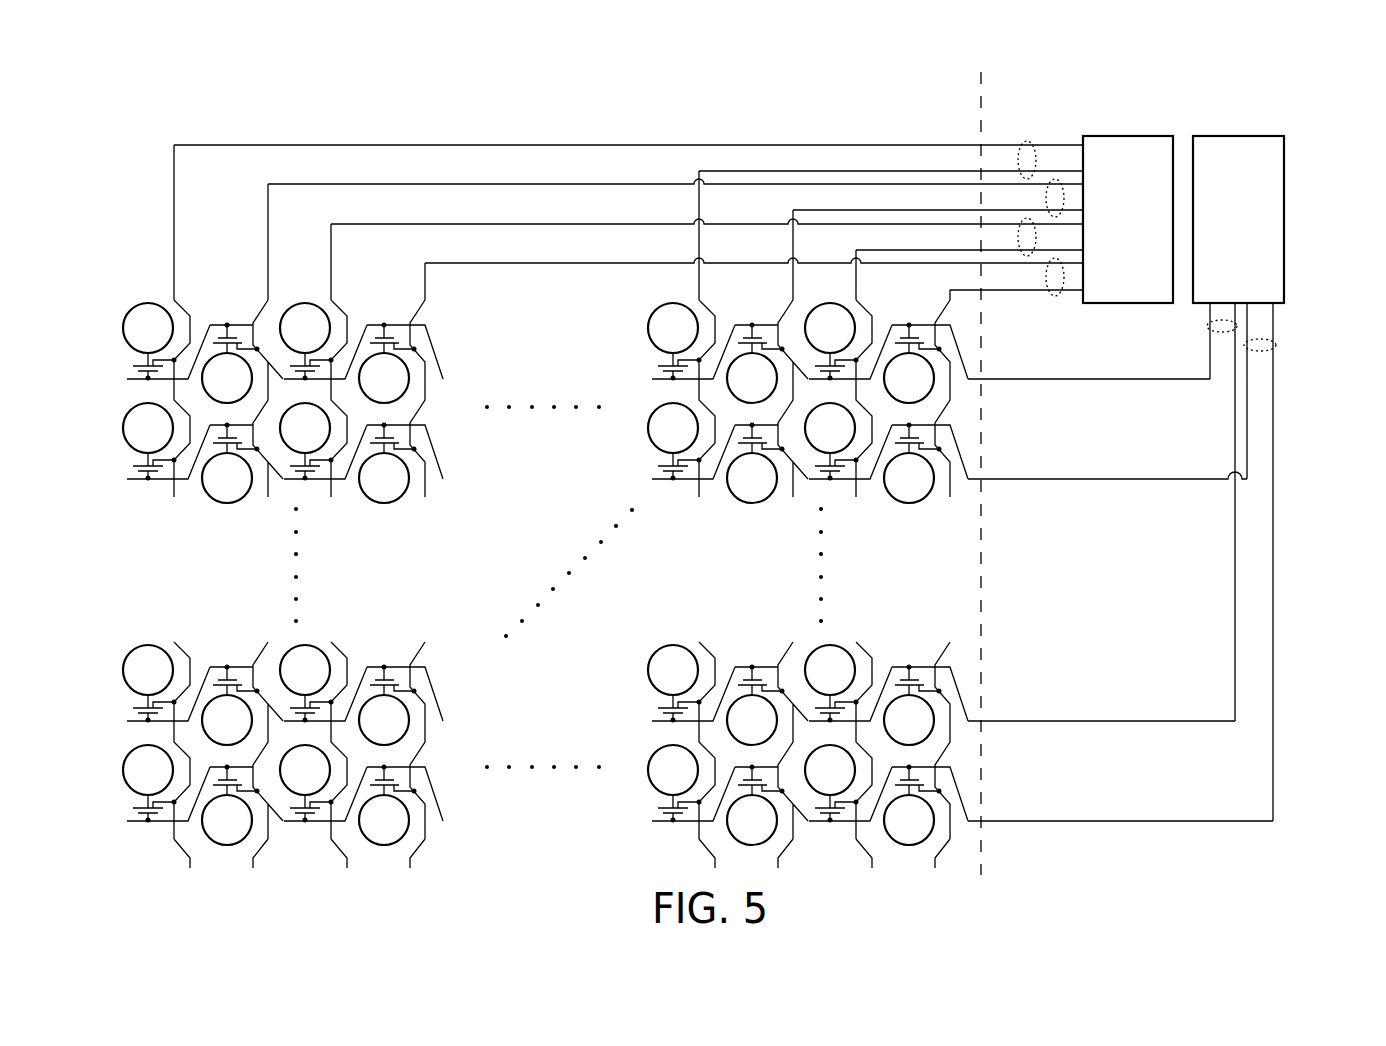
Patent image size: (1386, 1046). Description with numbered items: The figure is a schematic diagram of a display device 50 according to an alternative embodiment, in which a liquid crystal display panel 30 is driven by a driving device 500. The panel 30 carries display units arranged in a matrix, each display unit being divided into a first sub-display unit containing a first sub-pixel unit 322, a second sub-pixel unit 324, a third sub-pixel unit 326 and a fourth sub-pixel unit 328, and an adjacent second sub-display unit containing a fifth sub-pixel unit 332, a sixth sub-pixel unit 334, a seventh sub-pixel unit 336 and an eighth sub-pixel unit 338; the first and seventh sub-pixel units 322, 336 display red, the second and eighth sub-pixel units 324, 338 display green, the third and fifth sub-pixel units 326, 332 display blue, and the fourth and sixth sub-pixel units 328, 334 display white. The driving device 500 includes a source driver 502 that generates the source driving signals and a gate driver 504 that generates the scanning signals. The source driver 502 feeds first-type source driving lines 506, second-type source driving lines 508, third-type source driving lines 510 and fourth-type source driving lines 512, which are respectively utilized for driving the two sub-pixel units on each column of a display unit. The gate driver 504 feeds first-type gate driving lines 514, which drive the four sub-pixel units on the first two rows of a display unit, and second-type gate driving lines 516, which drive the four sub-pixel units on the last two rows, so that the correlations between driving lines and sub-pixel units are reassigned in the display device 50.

The liquid crystal display panel 30 is at (892, 95).
The display device 50 is at (1249, 106).
The driving device 500 is at (1071, 96).
The source driver 502 is at (1120, 305).
The gate driver 504 is at (1286, 217).
The first-type source driving lines 506 is at (1028, 141).
The second-type source driving lines 508 is at (1055, 178).
The third-type source driving lines 510 is at (1027, 257).
The fourth-type source driving lines 512 is at (1055, 297).
The first-type gate driving lines 514 is at (1206, 326).
The second-type gate driving lines 516 is at (1277, 345).
The first sub-pixel unit 322 is at (166, 342).
The second sub-pixel unit 324 is at (231, 363).
The third sub-pixel unit 326 is at (166, 442).
The fourth sub-pixel unit 328 is at (231, 463).
The fifth sub-pixel unit 332 is at (323, 342).
The sixth sub-pixel unit 334 is at (388, 363).
The seventh sub-pixel unit 336 is at (323, 442).
The eighth sub-pixel unit 338 is at (388, 463).